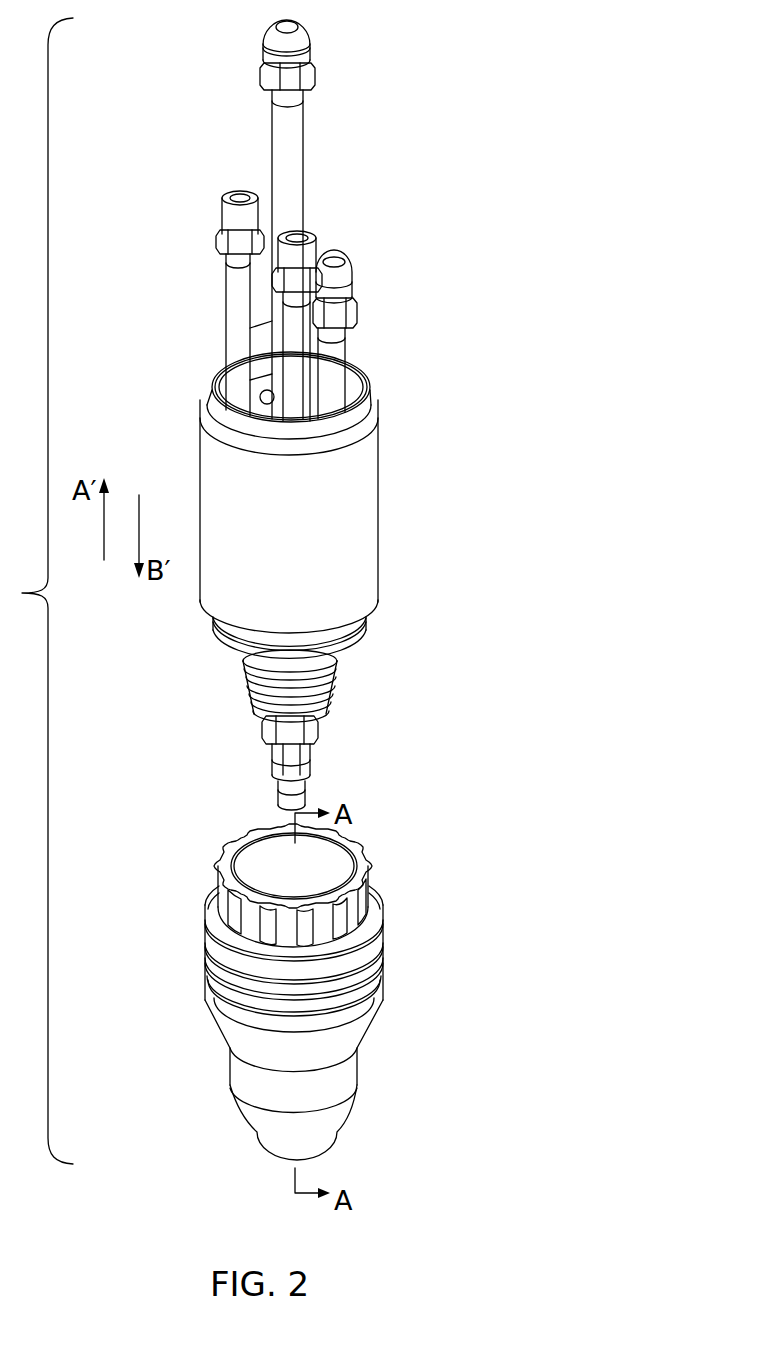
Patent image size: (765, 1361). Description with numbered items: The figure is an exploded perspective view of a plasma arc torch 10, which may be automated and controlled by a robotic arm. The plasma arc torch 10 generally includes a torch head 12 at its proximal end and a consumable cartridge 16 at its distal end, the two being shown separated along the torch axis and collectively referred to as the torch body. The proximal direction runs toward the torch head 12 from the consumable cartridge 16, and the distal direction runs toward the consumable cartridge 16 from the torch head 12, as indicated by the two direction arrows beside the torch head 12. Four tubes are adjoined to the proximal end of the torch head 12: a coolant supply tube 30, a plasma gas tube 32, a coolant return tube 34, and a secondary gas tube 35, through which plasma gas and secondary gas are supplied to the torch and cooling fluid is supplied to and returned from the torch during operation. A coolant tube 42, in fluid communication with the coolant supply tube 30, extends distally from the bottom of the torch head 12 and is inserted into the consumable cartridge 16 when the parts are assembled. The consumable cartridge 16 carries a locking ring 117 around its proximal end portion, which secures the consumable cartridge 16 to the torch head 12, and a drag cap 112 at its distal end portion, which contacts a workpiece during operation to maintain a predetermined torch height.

The plasma arc torch 10 is at (520, 292).
The torch head 12 is at (398, 494).
The consumable cartridge 16 is at (357, 992).
The coolant supply tube 30 is at (283, 145).
The plasma gas tube 32 is at (298, 361).
The coolant return tube 34 is at (335, 346).
The secondary gas tube 35 is at (237, 315).
The coolant tube 42 is at (307, 787).
The drag cap 112 is at (340, 1123).
The locking ring 117 is at (370, 868).